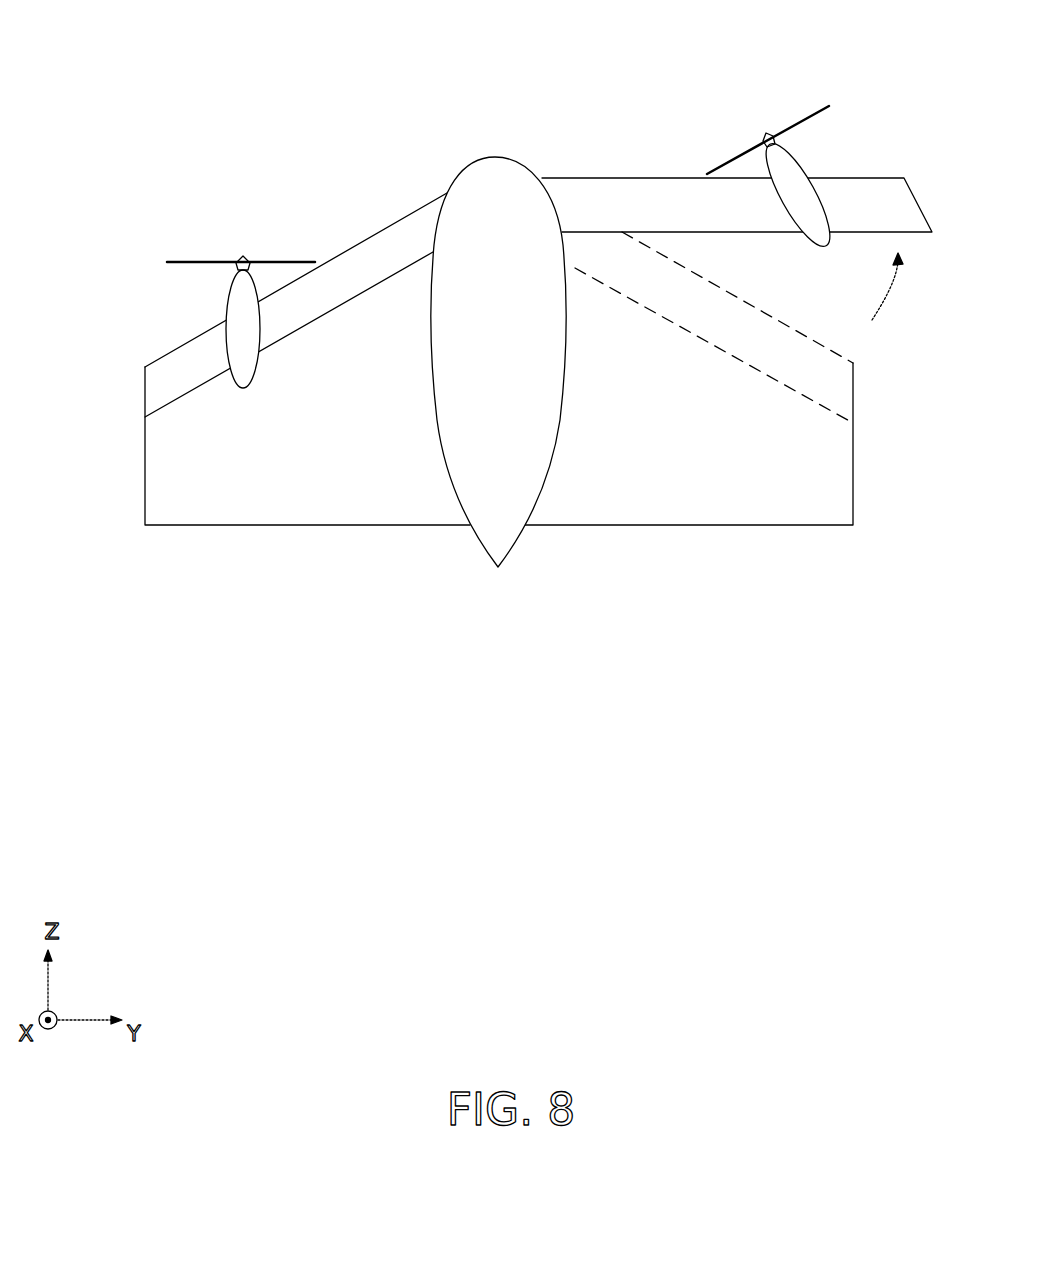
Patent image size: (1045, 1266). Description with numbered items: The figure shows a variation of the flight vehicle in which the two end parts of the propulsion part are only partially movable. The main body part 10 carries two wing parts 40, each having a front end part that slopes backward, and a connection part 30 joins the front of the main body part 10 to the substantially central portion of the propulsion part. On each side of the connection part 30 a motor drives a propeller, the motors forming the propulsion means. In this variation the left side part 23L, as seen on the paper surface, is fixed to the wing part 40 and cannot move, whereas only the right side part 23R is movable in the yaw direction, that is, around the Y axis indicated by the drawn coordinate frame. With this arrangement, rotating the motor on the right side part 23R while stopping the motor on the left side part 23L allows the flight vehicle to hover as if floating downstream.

The main body part 10 is at (493, 543).
The left side part 23L is at (363, 258).
The right side part 23R is at (638, 192).
The connection part 30 is at (538, 327).
The wing part 40 is at (313, 482).